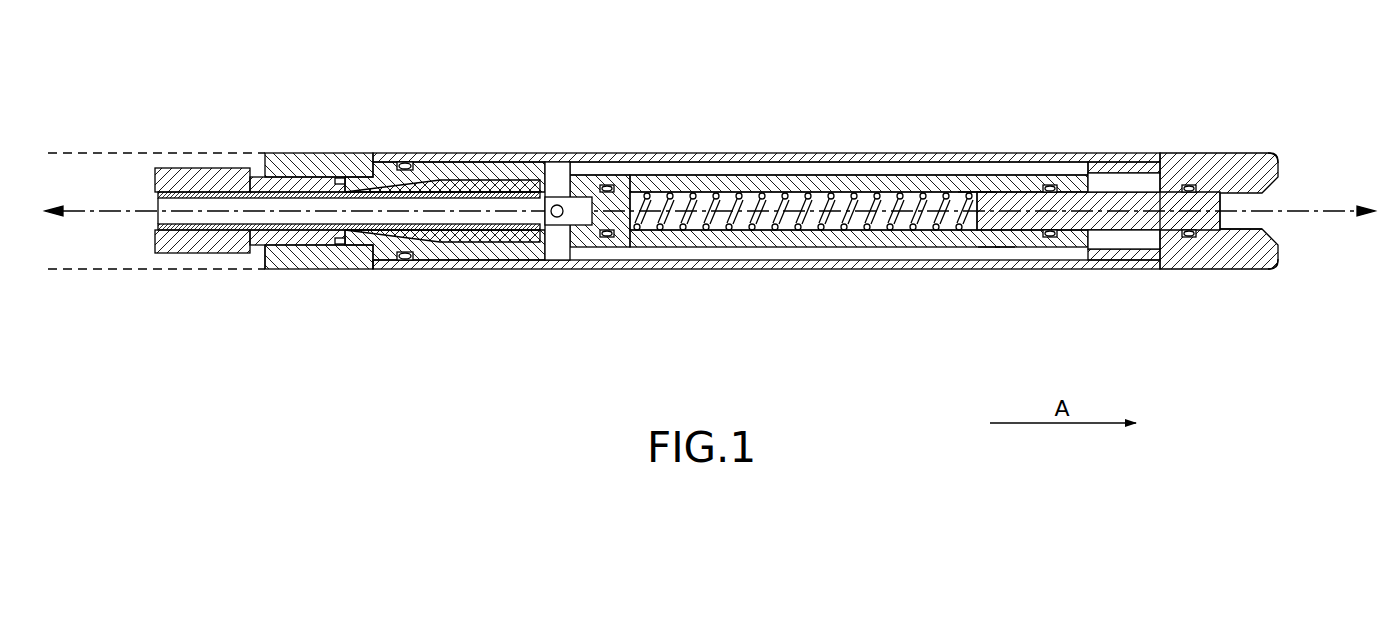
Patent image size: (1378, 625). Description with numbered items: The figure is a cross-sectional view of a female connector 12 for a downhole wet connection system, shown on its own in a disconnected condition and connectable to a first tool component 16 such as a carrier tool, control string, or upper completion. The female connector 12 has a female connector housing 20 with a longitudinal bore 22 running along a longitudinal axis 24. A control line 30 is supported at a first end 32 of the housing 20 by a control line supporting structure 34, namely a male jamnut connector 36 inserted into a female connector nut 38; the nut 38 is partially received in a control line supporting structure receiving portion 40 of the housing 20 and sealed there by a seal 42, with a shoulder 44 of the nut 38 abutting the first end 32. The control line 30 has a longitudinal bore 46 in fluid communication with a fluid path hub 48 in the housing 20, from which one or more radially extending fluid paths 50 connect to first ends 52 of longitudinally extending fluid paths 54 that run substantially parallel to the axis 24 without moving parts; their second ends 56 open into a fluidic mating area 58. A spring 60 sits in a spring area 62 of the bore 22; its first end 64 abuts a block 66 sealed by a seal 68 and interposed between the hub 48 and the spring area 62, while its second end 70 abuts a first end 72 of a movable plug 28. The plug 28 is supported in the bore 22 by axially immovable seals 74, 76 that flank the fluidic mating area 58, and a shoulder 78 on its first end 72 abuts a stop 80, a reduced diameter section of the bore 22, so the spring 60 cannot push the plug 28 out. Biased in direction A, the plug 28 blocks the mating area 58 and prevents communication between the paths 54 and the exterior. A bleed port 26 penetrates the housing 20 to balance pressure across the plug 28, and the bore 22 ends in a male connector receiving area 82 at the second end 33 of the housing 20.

The female connector 12 is at (840, 271).
The first tool component 16 is at (115, 272).
The female connector housing 20 is at (1185, 155).
The longitudinal bore 22 is at (977, 233).
The longitudinal axis 24 is at (1293, 207).
The bleed port 26 is at (674, 230).
The movable plug 28 is at (1102, 250).
The control line 30 is at (212, 222).
The first end 32 is at (377, 270).
The second end 33 is at (1277, 157).
The control line supporting structure 34 is at (307, 281).
The male jamnut connector 36 is at (210, 165).
The female connector nut 38 is at (325, 152).
The control line supporting structure receiving portion 40 is at (447, 263).
The seal 42 is at (406, 160).
The shoulder 44 is at (372, 162).
The longitudinal bore 46 is at (250, 192).
The fluid path hub 48 is at (549, 229).
The radially extending fluid paths 50 is at (563, 261).
The first ends 52 is at (573, 162).
The longitudinally extending fluid paths 54 is at (645, 175).
The second ends 56 is at (1116, 163).
The fluidic mating area 58 is at (1140, 183).
The spring 60 is at (778, 194).
The spring area 62 is at (862, 198).
The first end 64 is at (633, 170).
The block 66 is at (620, 249).
The seal 68 is at (602, 185).
The second end 70 is at (972, 192).
The first end 72 is at (986, 192).
The seal 74 is at (1049, 184).
The seal 76 is at (1189, 239).
The shoulder 78 is at (988, 248).
The stop 80 is at (1000, 249).
The male connector receiving area 82 is at (1287, 263).